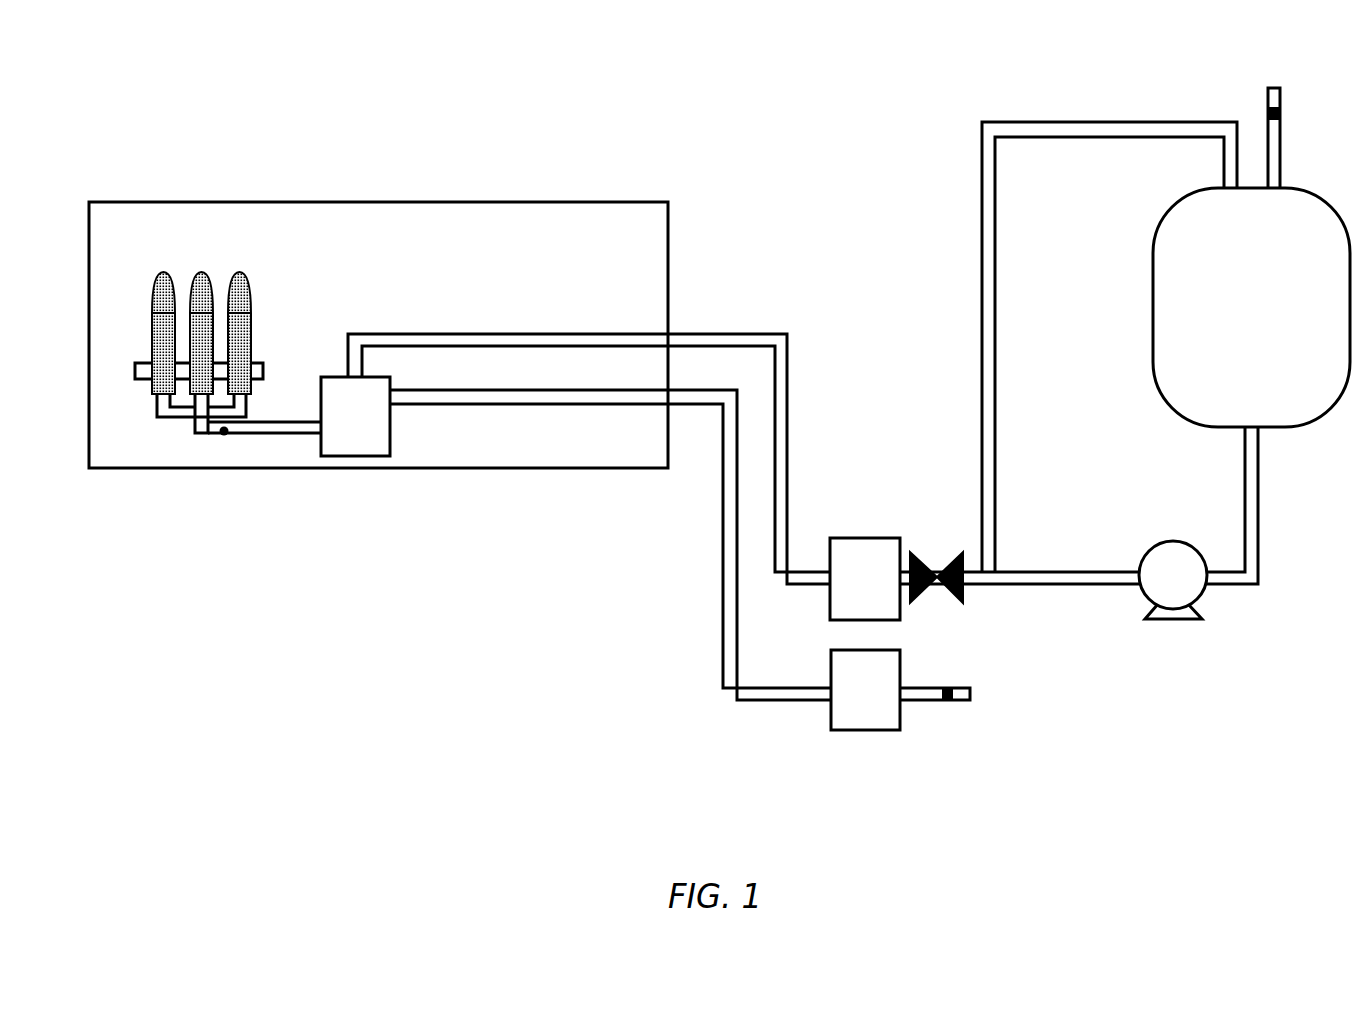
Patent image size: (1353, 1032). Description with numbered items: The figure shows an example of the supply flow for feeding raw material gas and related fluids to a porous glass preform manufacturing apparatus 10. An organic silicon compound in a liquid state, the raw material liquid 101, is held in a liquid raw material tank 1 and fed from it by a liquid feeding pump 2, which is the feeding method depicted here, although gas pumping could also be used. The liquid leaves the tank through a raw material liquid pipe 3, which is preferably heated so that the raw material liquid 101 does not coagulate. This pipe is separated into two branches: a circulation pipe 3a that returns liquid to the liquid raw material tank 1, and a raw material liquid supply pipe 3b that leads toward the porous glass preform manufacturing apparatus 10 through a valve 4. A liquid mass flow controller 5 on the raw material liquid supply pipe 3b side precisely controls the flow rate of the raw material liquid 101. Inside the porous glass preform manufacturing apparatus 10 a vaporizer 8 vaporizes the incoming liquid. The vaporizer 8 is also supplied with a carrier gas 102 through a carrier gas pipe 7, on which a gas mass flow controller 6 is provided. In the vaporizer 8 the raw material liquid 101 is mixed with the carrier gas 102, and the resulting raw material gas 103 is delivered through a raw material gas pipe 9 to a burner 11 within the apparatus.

The liquid raw material tank 1 is at (1315, 393).
The liquid feeding pump 2 is at (1173, 596).
The raw material liquid pipe 3 is at (1070, 590).
The circulation pipe 3a is at (980, 423).
The raw material liquid supply pipe 3b is at (790, 415).
The valve 4 is at (957, 598).
The liquid mass flow controller 5 is at (868, 567).
The gas mass flow controller 6 is at (864, 708).
The carrier gas pipe 7 is at (722, 633).
The vaporizer 8 is at (347, 433).
The raw material gas pipe 9 is at (272, 437).
The porous glass preform manufacturing apparatus 10 is at (530, 200).
The burner 11 is at (260, 280).
The raw material liquid 101 is at (1281, 108).
The carrier gas 102 is at (948, 702).
The raw material gas 103 is at (225, 433).